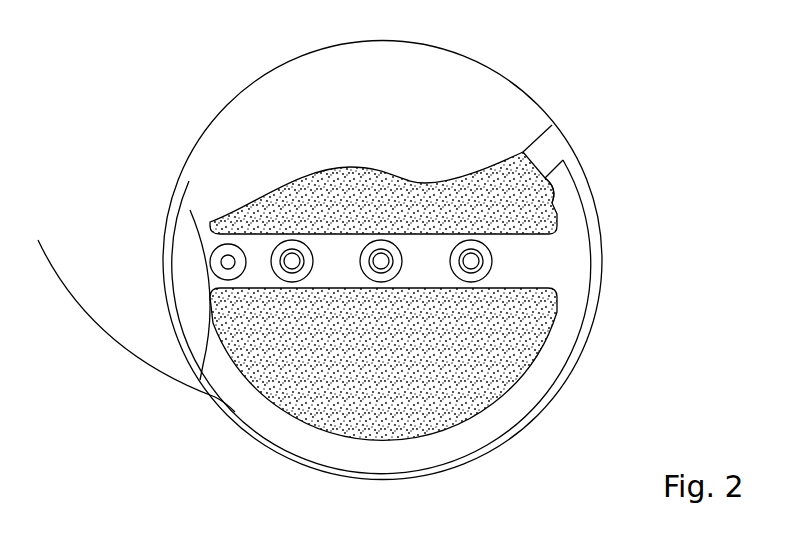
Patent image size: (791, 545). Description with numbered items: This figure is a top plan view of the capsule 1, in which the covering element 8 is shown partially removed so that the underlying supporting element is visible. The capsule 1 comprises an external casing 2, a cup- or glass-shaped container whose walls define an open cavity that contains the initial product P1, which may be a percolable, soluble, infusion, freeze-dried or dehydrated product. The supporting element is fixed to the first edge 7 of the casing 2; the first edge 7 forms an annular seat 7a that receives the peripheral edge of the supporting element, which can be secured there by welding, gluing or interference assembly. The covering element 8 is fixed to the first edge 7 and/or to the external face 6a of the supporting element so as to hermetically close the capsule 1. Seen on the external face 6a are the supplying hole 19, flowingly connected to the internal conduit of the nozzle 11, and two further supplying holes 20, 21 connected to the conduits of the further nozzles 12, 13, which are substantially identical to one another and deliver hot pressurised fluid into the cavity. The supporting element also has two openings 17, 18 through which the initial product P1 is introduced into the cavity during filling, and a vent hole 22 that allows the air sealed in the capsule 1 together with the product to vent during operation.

The capsule 1 is at (594, 85).
The external casing 2 is at (139, 291).
The external face 6a is at (545, 368).
The first edge 7 is at (598, 226).
The annular seat 7a is at (506, 434).
The covering element 8 is at (463, 83).
The nozzle 11 is at (372, 266).
The further nozzle 12 is at (210, 227).
The further nozzle 13 is at (466, 268).
The opening 17 is at (547, 202).
The opening 18 is at (552, 322).
The supplying hole 19 is at (387, 275).
The further supplying hole 20 is at (292, 250).
The further supplying hole 21 is at (483, 272).
The vent hole 22 is at (210, 262).
The initial product P1 is at (267, 327).